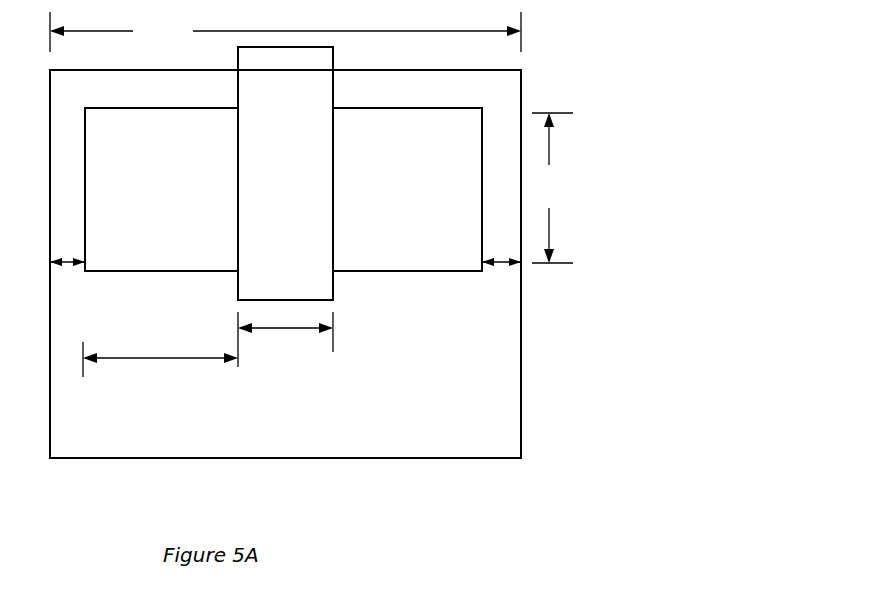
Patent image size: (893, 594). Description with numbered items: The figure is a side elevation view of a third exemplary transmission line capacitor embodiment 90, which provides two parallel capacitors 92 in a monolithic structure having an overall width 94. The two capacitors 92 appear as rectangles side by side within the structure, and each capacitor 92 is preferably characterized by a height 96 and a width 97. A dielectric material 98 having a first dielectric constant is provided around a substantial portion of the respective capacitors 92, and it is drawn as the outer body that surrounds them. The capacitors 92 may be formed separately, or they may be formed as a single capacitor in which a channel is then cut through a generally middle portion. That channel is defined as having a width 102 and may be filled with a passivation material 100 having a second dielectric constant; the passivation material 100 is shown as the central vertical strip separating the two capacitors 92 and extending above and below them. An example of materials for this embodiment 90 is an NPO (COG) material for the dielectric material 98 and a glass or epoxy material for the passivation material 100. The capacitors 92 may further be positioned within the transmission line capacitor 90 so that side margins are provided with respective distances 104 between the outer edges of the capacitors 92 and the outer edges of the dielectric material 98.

The transmission line embodiment 90 is at (556, 67).
The capacitors 92 is at (171, 197).
The width 94 is at (285, 32).
The height 96 is at (552, 188).
The width 97 is at (130, 360).
The dielectric material 98 is at (431, 431).
The passivation material 100 is at (303, 154).
The width 102 is at (280, 330).
The distances 104 is at (67, 265).